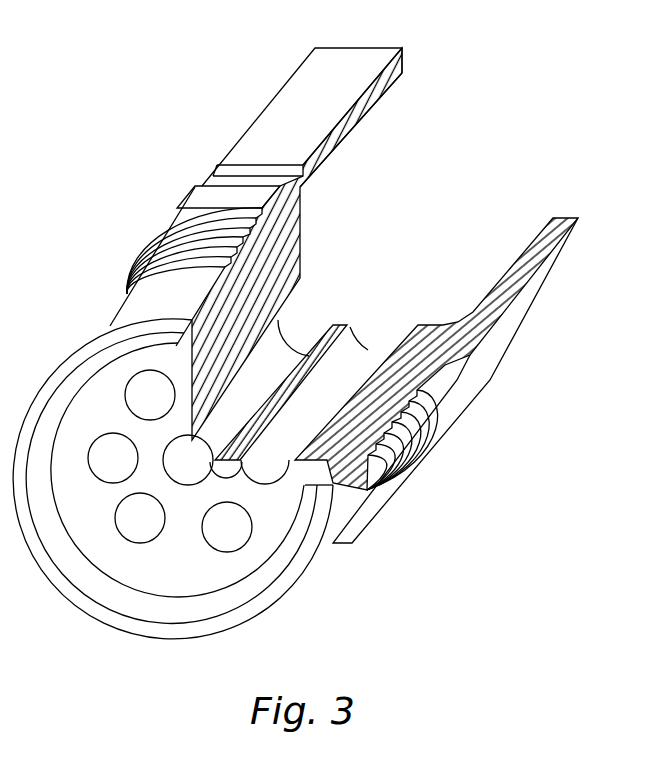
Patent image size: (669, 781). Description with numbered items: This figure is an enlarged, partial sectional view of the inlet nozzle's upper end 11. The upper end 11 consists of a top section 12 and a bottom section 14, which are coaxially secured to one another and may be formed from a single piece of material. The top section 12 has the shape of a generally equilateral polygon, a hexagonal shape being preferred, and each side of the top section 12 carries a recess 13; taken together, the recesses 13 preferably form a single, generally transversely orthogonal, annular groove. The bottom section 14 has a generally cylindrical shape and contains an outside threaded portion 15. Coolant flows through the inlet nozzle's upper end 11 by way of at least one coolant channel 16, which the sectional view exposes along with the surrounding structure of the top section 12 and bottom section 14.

The inlet nozzle's upper end 11 is at (456, 168).
The top section 12 is at (285, 130).
The recess 13 is at (242, 182).
The bottom section 14 is at (122, 320).
The outside threaded portion 15 is at (177, 233).
The coolant channel 16 is at (343, 370).